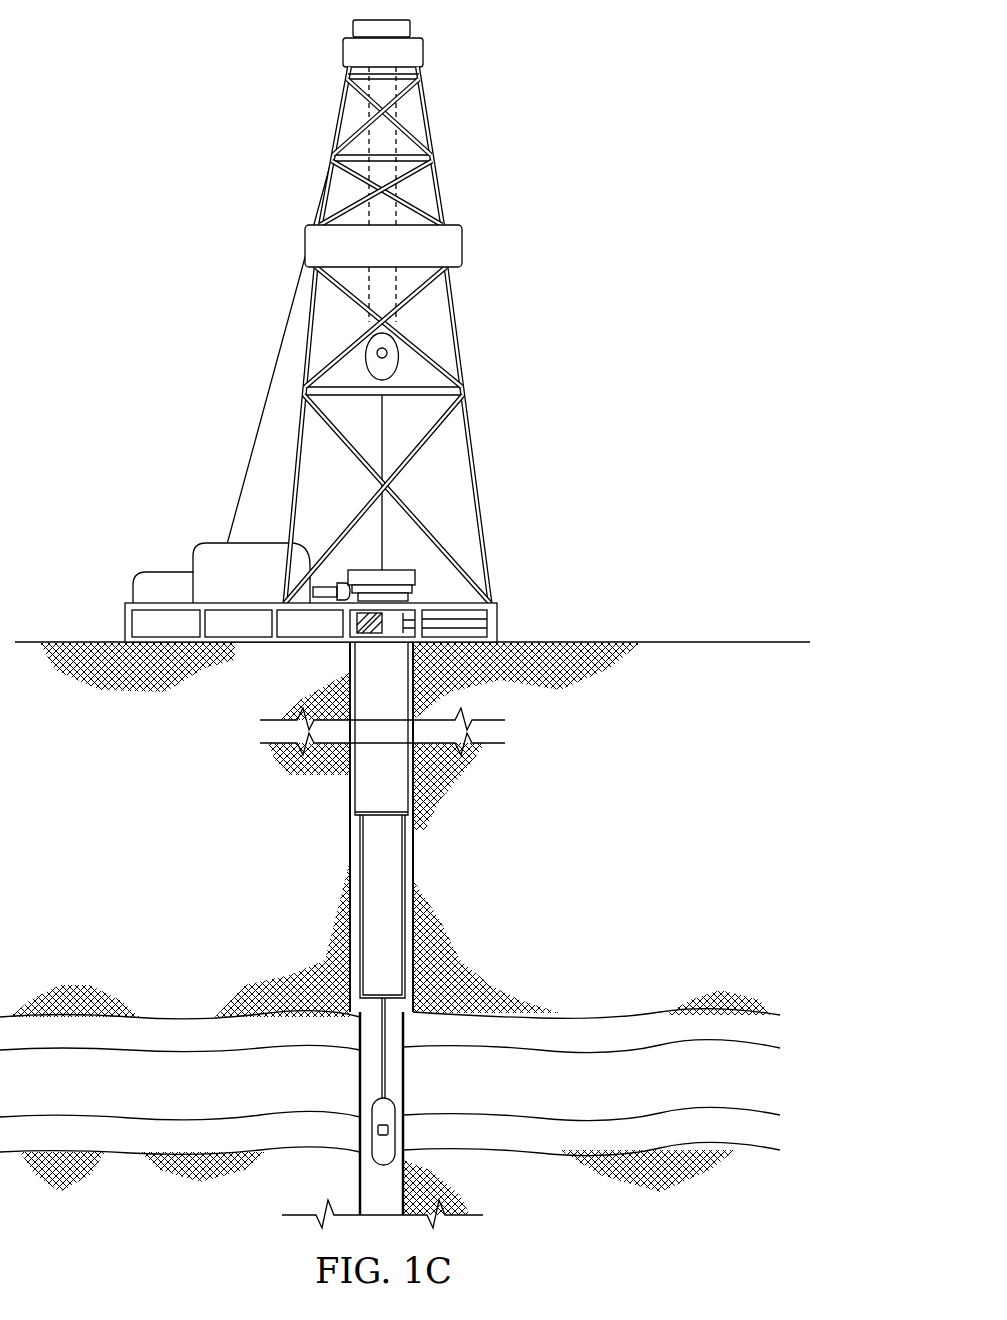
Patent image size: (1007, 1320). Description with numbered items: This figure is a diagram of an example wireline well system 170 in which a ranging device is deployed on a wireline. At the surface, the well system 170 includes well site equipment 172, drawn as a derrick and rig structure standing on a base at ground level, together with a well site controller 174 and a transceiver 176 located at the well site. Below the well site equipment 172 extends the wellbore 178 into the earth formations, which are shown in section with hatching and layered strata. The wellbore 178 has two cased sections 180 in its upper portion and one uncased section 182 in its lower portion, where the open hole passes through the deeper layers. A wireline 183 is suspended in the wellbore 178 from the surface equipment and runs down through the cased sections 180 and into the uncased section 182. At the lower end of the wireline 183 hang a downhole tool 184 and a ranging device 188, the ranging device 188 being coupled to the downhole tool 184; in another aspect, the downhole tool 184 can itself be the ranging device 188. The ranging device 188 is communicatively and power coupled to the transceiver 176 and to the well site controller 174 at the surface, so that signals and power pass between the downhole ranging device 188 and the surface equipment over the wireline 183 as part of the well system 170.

The wireline well system 170 is at (334, 311).
The well site equipment 172 is at (461, 339).
The well site controller 174 is at (239, 628).
The transceiver 176 is at (338, 636).
The wellbore 178 is at (357, 887).
The cased section 180 is at (365, 785).
The uncased section 182 is at (368, 1062).
The wireline 183 is at (385, 1077).
The downhole tool 184 is at (382, 1163).
The ranging device 188 is at (391, 1130).